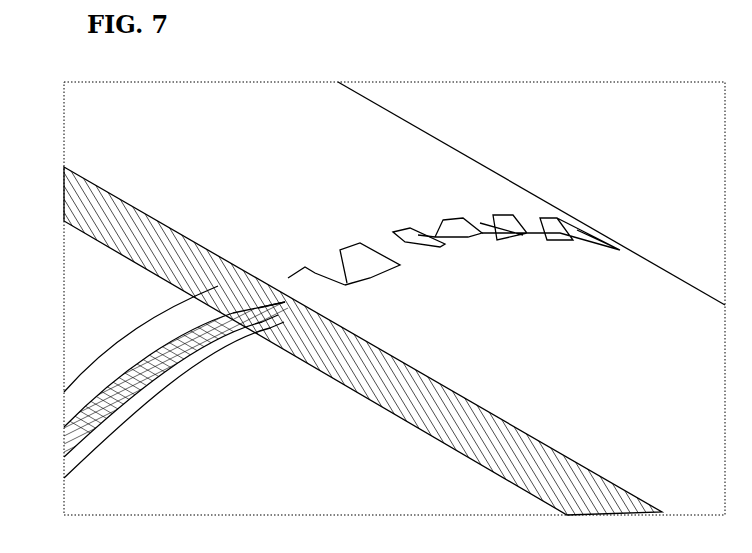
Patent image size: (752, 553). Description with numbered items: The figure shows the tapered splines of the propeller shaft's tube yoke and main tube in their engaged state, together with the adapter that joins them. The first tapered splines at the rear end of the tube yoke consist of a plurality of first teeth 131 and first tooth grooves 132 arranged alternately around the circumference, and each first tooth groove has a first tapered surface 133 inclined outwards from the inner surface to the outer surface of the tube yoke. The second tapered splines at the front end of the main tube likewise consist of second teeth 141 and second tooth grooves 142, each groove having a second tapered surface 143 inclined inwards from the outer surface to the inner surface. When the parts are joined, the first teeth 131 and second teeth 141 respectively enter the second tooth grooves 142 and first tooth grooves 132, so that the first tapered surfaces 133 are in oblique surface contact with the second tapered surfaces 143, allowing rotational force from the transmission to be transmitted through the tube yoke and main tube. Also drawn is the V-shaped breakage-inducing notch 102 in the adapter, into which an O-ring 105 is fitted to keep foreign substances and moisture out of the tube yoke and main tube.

The breakage-inducing notch 102 is at (121, 363).
The O-ring 105 is at (118, 408).
The first teeth 131 is at (347, 267).
The first tooth grooves 132 is at (313, 270).
The first tapered surface 133 is at (235, 313).
The second teeth 141 is at (418, 235).
The second tooth grooves 142 is at (418, 235).
The second tapered surface 143 is at (285, 304).